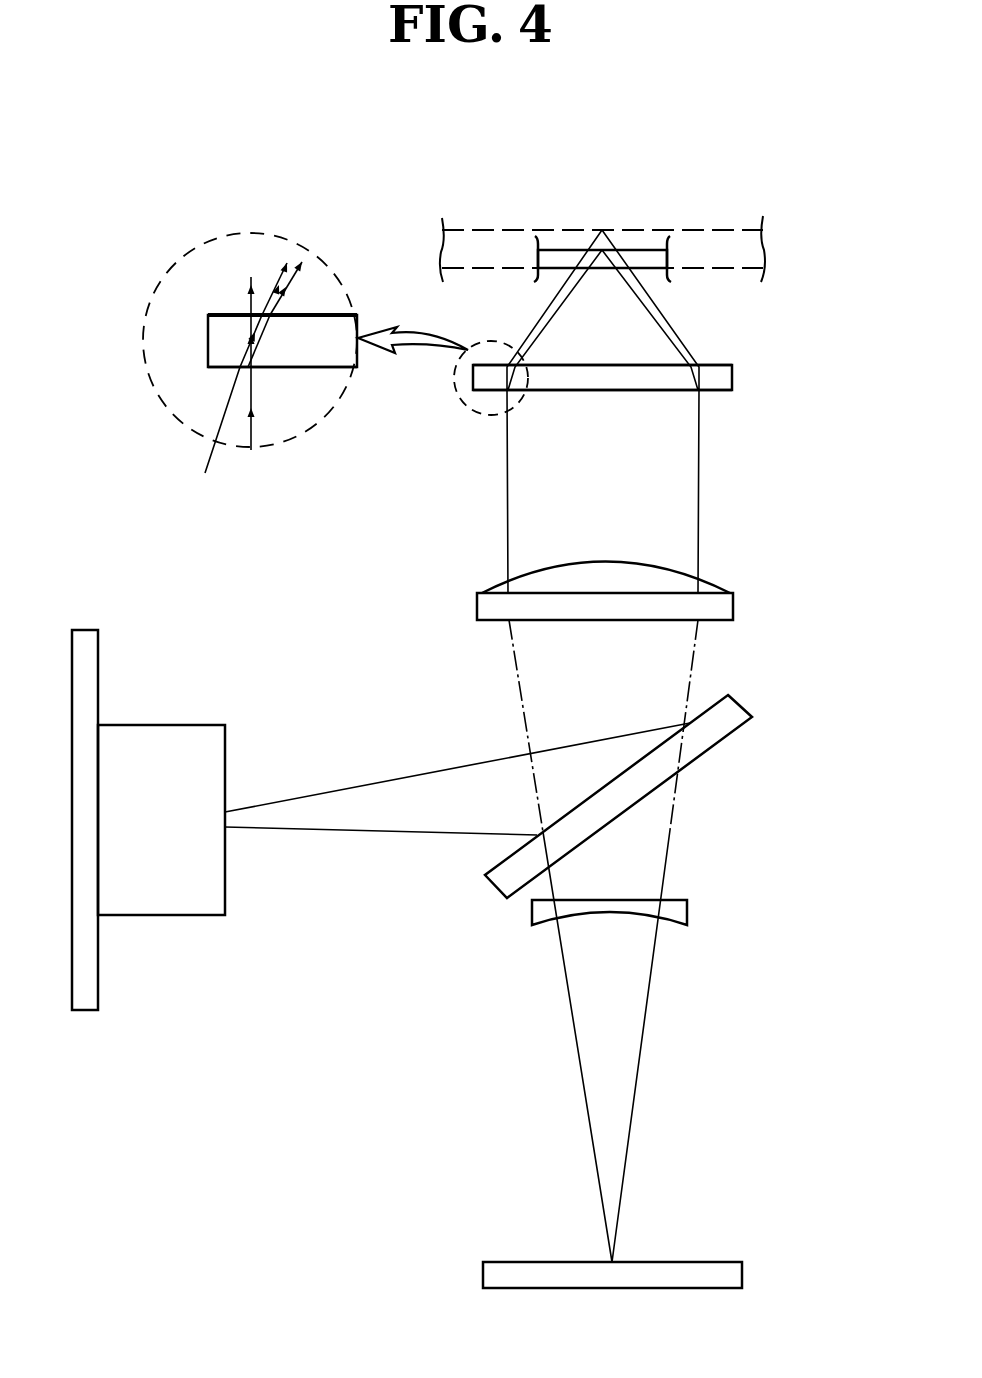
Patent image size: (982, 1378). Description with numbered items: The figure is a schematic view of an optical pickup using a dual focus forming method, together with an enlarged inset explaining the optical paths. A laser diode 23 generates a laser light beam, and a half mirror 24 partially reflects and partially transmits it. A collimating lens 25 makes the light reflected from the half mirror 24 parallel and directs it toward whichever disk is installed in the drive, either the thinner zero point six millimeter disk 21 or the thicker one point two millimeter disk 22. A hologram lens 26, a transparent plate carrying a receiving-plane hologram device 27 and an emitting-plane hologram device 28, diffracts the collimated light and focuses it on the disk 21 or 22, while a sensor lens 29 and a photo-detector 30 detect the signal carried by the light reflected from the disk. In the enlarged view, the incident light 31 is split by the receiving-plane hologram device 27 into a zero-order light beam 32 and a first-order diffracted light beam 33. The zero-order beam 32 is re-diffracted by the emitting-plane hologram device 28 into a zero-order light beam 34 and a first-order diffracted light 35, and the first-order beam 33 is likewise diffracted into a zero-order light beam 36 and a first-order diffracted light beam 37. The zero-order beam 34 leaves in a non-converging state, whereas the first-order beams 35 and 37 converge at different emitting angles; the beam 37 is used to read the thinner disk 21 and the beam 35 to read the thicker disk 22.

The 0.6 mm disk 21 is at (643, 257).
The 1.2 mm disk 22 is at (492, 243).
The laser diode 23 is at (200, 743).
The half mirror 24 is at (730, 722).
The collimating lens 25 is at (707, 607).
The hologram lens 26 is at (732, 378).
The receiving-plane hologram device 27 is at (225, 368).
The emitting-plane hologram device 28 is at (210, 313).
The sensor lens 29 is at (683, 910).
The photo-detector 30 is at (723, 1273).
The incident light 31 is at (253, 430).
The zero-order light beam 32 is at (225, 412).
The 1st-order diffracted light beam 33 is at (258, 352).
The zero-order light beam 34 is at (250, 302).
The 1st-order diffracted light 35 is at (276, 282).
The zero-order light beam 36 is at (282, 290).
The 1st-order diffracted light beam 37 is at (298, 272).